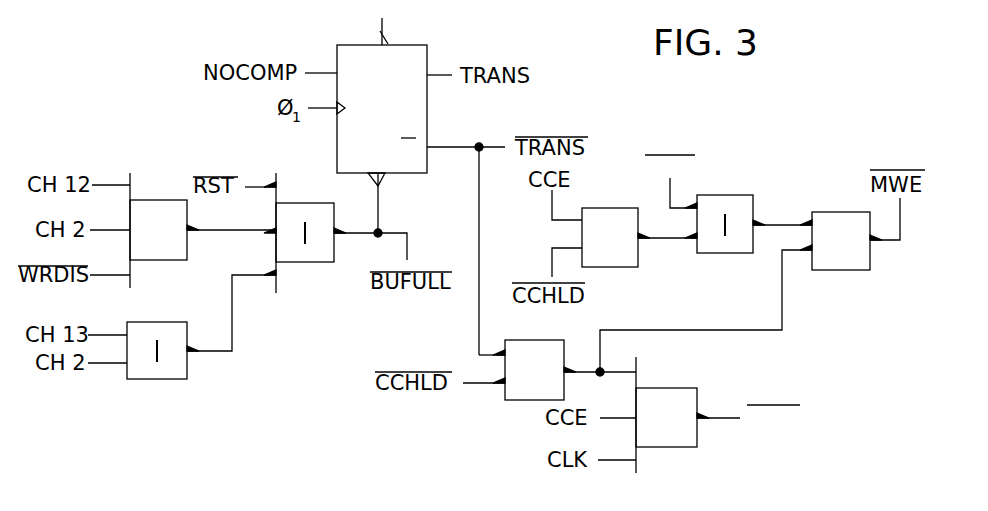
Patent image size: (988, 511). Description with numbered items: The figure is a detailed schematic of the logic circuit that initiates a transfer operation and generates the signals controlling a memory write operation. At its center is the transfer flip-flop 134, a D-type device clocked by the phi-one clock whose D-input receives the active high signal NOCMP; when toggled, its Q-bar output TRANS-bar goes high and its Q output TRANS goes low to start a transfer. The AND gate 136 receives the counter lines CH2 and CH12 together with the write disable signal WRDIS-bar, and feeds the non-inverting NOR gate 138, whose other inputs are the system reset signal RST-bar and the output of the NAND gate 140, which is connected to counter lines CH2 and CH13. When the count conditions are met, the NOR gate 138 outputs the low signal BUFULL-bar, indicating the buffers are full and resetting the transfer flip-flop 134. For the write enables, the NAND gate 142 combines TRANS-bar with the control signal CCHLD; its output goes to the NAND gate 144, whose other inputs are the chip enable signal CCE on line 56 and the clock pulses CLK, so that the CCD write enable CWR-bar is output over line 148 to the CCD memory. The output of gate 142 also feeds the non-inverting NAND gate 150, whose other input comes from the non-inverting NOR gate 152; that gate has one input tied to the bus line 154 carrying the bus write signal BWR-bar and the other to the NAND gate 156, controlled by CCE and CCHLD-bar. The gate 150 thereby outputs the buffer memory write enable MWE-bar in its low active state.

The transfer flip-flop 134 is at (357, 50).
The AND gate 136 is at (180, 248).
The non-inverting NOR gate 138 is at (318, 255).
The NAND gate 140 is at (180, 367).
The NAND gate 142 is at (518, 393).
The NAND gate 144 is at (688, 440).
The line 148 is at (722, 418).
The non-inverting NAND gate 150 is at (857, 262).
The non-inverting NOR gate 152 is at (713, 245).
The bus line 154 is at (672, 195).
The NAND gate 156 is at (612, 260).
The line 56 is at (622, 418).